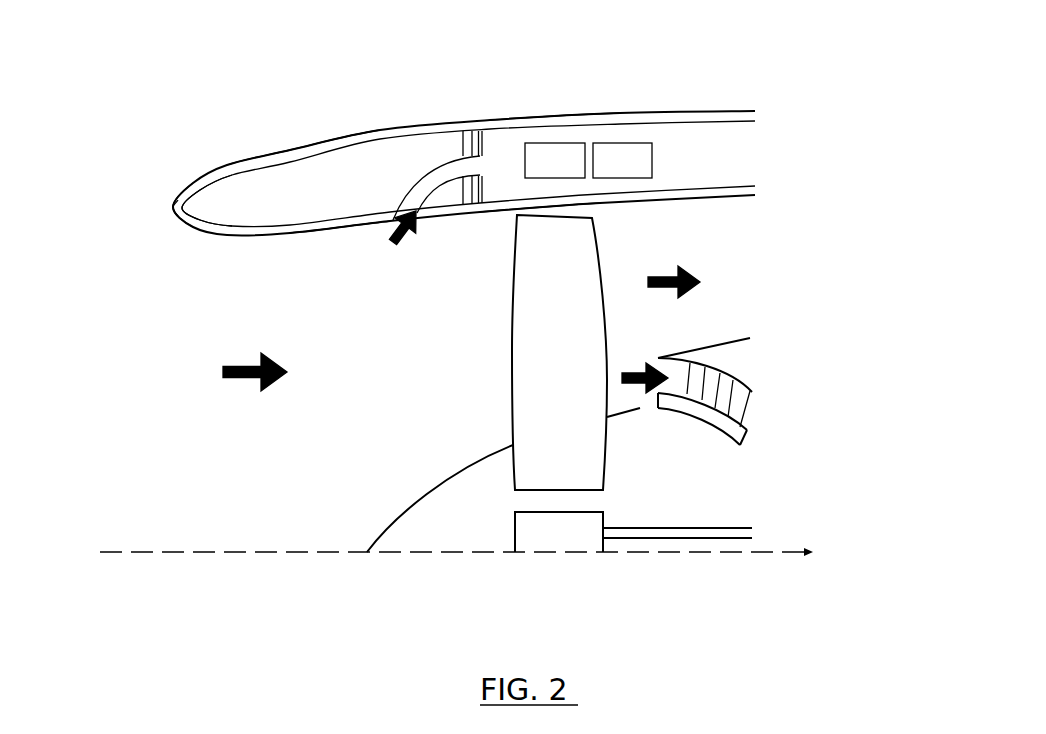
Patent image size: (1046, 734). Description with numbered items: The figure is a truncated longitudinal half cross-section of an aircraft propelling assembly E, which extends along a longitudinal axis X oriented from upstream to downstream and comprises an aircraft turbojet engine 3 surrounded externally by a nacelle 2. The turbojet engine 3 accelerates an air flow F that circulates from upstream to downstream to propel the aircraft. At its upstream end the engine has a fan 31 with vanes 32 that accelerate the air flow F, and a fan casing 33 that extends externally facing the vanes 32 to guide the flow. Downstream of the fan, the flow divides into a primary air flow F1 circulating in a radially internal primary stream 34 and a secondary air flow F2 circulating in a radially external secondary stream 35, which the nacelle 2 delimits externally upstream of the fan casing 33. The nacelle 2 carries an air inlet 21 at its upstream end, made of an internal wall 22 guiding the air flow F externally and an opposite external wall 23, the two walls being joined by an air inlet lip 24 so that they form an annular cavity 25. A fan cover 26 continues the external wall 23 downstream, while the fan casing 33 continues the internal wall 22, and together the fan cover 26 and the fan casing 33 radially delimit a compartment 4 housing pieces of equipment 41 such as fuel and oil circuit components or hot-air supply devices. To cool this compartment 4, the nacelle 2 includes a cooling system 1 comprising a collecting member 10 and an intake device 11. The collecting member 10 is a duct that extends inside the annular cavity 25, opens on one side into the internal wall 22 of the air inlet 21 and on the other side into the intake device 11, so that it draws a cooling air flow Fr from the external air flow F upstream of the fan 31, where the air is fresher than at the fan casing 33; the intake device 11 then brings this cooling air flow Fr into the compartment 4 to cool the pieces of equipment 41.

The cooling system 1 is at (477, 78).
The nacelle 2 is at (794, 122).
The aircraft turbojet engine 3 is at (833, 226).
The compartment 4 is at (717, 167).
The collecting member 10 is at (440, 158).
The intake device 11 is at (482, 160).
The air inlet 21 is at (197, 150).
The internal wall 22 is at (323, 234).
The external wall 23 is at (297, 147).
The air inlet lip 24 is at (172, 212).
The annular cavity 25 is at (355, 196).
The fan cover 26 is at (556, 116).
The fan 31 is at (560, 562).
The vanes 32 is at (570, 368).
The fan casing 33 is at (500, 212).
The primary stream 34 is at (760, 420).
The secondary stream 35 is at (755, 305).
The pieces of equipment 41 is at (568, 173).
The aircraft propelling assembly E is at (908, 82).
The air flow F is at (255, 361).
The primary air flow F1 is at (645, 367).
The secondary air flow F2 is at (674, 271).
The cooling air flow Fr is at (393, 240).
The longitudinal axis X is at (475, 553).